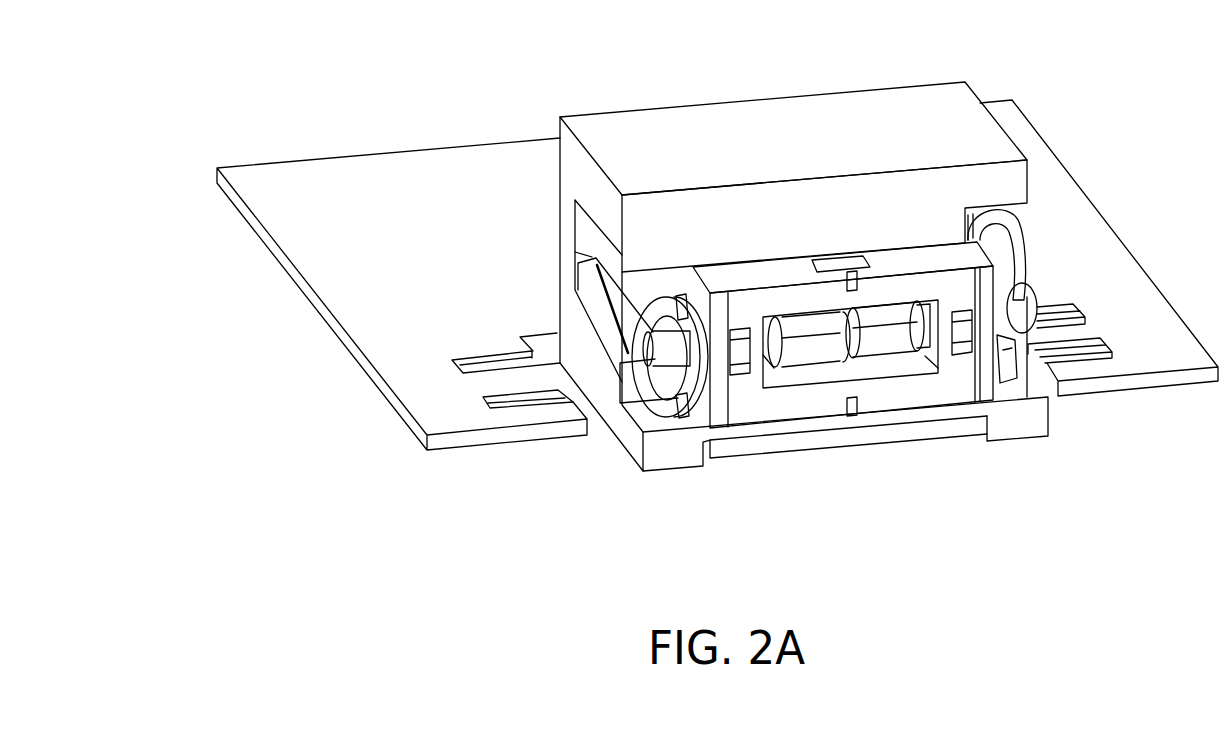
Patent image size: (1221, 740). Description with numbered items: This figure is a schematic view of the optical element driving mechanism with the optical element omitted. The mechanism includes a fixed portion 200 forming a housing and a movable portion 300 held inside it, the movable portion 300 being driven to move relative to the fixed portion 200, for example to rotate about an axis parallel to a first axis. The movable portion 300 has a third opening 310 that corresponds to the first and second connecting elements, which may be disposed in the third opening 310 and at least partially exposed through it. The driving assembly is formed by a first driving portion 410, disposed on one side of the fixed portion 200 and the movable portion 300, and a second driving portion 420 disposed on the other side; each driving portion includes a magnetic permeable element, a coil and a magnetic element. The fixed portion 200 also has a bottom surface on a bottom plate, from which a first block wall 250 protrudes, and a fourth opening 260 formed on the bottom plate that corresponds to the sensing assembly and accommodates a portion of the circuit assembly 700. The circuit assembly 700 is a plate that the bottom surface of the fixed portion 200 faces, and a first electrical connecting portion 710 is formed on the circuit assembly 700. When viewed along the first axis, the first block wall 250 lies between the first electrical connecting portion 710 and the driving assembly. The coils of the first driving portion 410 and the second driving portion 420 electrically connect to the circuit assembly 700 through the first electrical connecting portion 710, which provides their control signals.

The fixed portion 200 is at (762, 135).
The first block wall 250 is at (676, 449).
The fourth opening 260 is at (810, 466).
The movable portion 300 is at (748, 392).
The third opening 310 is at (913, 367).
The first driving portion 410 is at (542, 242).
The second driving portion 420 is at (1044, 258).
The circuit assembly 700 is at (396, 316).
The first electrical connecting portion 710 is at (483, 372).